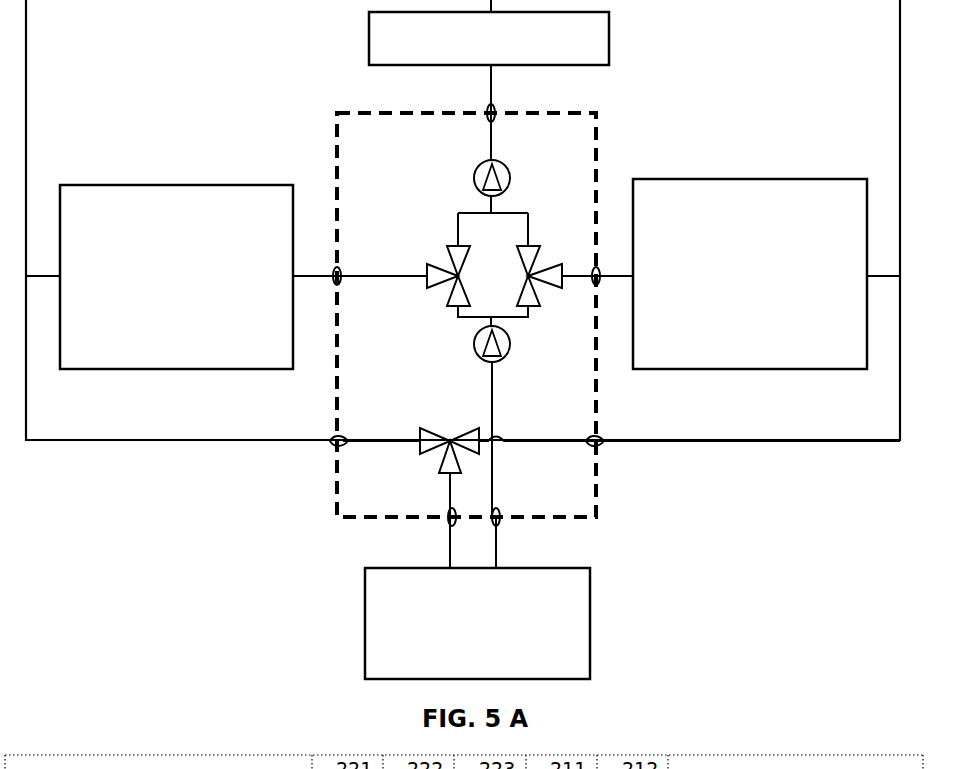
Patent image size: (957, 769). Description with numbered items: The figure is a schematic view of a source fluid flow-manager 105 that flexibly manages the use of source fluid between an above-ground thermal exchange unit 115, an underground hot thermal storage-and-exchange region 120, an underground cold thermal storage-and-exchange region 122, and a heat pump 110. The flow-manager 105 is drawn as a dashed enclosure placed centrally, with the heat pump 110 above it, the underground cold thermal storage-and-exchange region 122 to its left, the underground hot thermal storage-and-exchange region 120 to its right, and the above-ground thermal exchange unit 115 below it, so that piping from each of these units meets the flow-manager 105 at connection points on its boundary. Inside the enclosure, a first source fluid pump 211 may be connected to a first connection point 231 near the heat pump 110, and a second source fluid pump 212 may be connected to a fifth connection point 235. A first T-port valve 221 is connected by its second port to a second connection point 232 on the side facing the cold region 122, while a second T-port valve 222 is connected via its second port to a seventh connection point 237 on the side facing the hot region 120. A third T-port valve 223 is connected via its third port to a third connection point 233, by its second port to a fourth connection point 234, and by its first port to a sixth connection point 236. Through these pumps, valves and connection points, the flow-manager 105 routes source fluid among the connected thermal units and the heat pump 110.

The source fluid flow-manager 105 is at (466, 315).
The heat pump 110 is at (489, 38).
The above-ground thermal exchange unit 115 is at (477, 623).
The underground hot thermal storage-and-exchange region 120 is at (750, 274).
The underground cold thermal storage-and-exchange region 122 is at (176, 277).
The first source fluid pump 211 is at (506, 167).
The second source fluid pump 212 is at (510, 358).
The first T-port valve 221 is at (447, 252).
The second T-port valve 222 is at (541, 284).
The third T-port valve 223 is at (458, 430).
The first connection point 231 is at (487, 110).
The second connection point 232 is at (336, 268).
The third connection point 233 is at (334, 445).
The fourth connection point 234 is at (448, 517).
The fifth connection point 235 is at (500, 516).
The sixth connection point 236 is at (600, 446).
The seventh connection point 237 is at (597, 268).